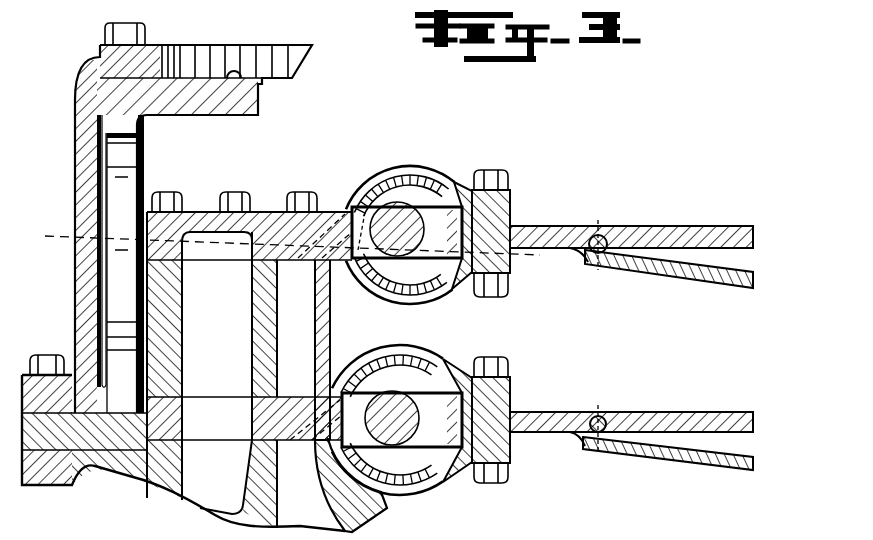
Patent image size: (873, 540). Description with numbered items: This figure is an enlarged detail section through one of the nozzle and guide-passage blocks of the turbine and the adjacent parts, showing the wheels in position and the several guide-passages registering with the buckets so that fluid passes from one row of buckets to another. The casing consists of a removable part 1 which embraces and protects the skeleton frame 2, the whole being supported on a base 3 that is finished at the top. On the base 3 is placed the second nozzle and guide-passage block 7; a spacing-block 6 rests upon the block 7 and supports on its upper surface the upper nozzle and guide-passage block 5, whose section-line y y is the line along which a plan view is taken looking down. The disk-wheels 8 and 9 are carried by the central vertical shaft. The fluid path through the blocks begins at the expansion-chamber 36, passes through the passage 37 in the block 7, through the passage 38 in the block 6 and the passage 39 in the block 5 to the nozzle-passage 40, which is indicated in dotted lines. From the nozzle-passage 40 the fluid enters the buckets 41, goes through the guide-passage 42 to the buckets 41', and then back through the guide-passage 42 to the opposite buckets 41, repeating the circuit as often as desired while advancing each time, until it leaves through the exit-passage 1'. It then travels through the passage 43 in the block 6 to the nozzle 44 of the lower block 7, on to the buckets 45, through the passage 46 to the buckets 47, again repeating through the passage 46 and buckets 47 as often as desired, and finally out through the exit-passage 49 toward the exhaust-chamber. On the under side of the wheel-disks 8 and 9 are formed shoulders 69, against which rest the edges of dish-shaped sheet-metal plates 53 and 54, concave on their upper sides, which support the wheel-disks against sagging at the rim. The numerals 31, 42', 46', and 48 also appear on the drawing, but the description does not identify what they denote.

The removable part of the casing 1 is at (175, 218).
The exit-passage 1' is at (280, 314).
The skeleton frame 2 is at (262, 112).
The base 3 is at (130, 470).
The nozzle and guide-passage block 5 is at (265, 211).
The spacing-block 6 is at (331, 313).
The second nozzle and guide-passage block 7 is at (250, 396).
The disk-wheel 8 is at (652, 225).
The disk-wheel 9 is at (653, 412).
The stud 31 is at (139, 182).
The expansion-chamber 36 is at (229, 484).
The passage 37 is at (217, 418).
The passage 38 is at (217, 314).
The passage 39 is at (253, 241).
The nozzle-passage 40 is at (348, 207).
The buckets 41 is at (403, 251).
The buckets 41' is at (400, 220).
The guide-passage 42 is at (407, 232).
The upper ball 42' is at (394, 219).
The passage 43 is at (296, 328).
The nozzle 44 is at (305, 397).
The buckets 45 is at (418, 488).
The passage 46 is at (402, 420).
The lower ball 46' is at (384, 404).
The buckets 47 is at (425, 372).
The lower passage 48 is at (306, 440).
The exit-passage 49 is at (322, 485).
The sheet-metal plate 53 is at (677, 270).
The sheet-metal plate 54 is at (673, 455).
The shoulder 69 is at (594, 258).
The section-line y y is at (296, 249).